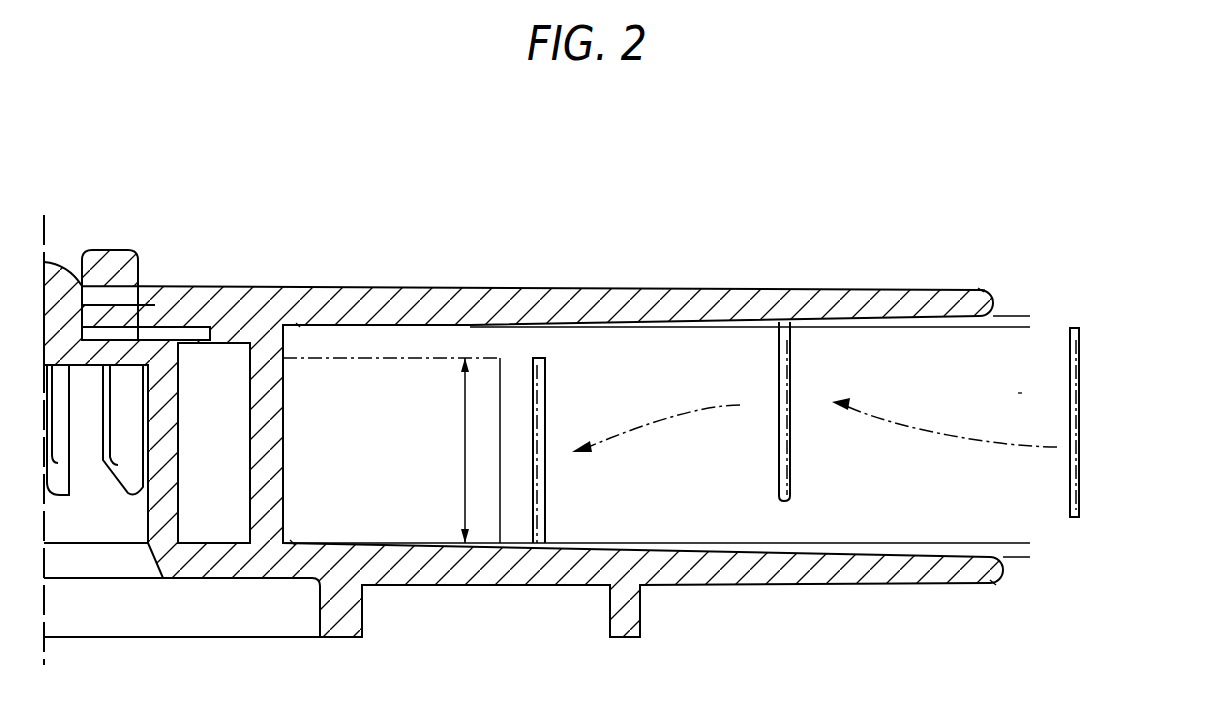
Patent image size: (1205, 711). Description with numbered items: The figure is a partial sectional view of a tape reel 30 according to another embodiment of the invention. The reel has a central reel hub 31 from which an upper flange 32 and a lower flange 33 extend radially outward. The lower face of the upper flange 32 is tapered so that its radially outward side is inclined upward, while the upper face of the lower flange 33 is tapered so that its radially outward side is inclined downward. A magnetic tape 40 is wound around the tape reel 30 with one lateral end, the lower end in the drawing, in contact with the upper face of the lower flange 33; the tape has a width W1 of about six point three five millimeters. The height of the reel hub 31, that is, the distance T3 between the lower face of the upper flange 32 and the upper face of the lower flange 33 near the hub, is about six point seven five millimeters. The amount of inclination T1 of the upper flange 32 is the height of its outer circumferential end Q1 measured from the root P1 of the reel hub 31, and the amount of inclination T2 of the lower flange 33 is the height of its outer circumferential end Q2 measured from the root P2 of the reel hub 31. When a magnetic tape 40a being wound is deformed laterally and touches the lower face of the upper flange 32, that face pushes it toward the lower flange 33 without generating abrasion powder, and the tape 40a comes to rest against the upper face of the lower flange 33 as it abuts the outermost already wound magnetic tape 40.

The tape reel 30 is at (262, 178).
The reel hub 31 is at (283, 398).
The upper flange 32 is at (597, 288).
The lower flange 33 is at (768, 585).
The magnetic tape 40 is at (415, 358).
The magnetic tape to be wound 40a is at (545, 497).
The root of the reel hub P1 is at (298, 325).
The root of the reel hub P2 is at (293, 543).
The outer circumferential end Q1 is at (980, 290).
The outer circumferential end Q2 is at (994, 585).
The amount of inclination of the upper flange T1 is at (1022, 543).
The amount of inclination of the lower flange T2 is at (1022, 557).
The distance between the flanges near the reel hub T3 is at (1020, 393).
The width of the magnetic tape W1 is at (446, 450).